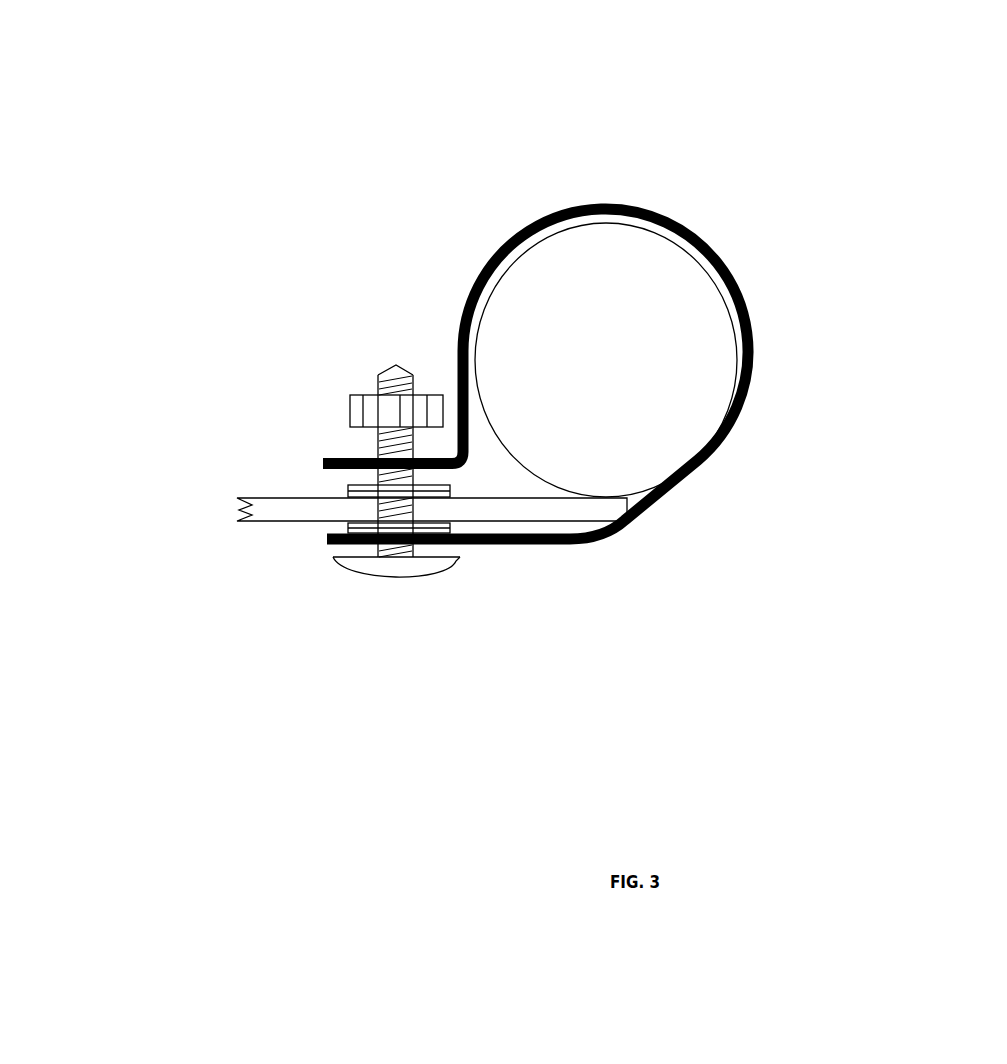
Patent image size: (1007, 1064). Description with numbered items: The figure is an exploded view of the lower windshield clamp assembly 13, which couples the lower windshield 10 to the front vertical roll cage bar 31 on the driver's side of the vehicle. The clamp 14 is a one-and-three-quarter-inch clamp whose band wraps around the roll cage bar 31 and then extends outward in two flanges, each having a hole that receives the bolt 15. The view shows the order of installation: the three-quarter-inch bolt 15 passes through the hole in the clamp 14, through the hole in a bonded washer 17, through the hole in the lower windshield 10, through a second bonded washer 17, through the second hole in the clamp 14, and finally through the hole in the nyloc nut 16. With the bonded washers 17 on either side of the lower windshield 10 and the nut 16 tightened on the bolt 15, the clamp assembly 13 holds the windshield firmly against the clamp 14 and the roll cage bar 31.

The lower windshield clamp assembly 13 is at (493, 58).
The clamp 14 is at (755, 357).
The front vertical roll cage bar driver's side 31 is at (622, 368).
The lower windshield 10 is at (278, 511).
The bolt 15 is at (396, 568).
The nyloc nut 16 is at (350, 411).
The bonded washer 17 is at (348, 488).